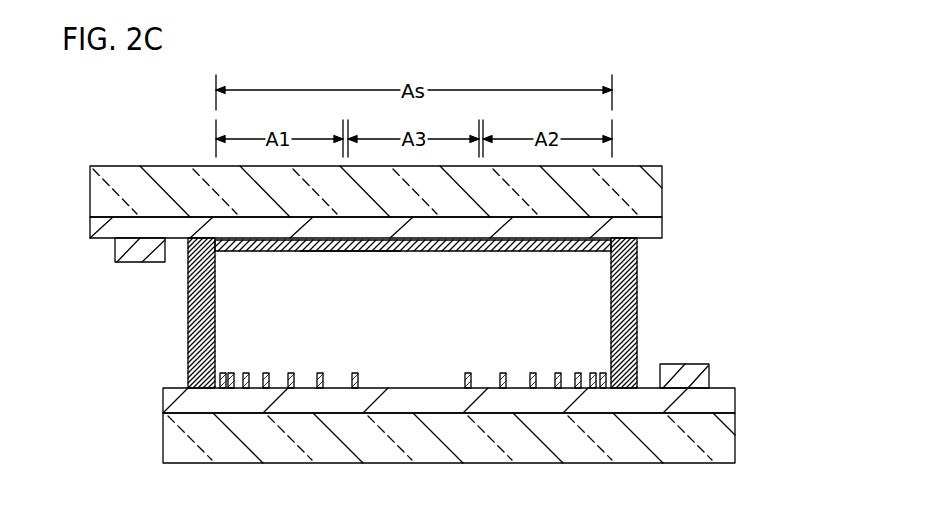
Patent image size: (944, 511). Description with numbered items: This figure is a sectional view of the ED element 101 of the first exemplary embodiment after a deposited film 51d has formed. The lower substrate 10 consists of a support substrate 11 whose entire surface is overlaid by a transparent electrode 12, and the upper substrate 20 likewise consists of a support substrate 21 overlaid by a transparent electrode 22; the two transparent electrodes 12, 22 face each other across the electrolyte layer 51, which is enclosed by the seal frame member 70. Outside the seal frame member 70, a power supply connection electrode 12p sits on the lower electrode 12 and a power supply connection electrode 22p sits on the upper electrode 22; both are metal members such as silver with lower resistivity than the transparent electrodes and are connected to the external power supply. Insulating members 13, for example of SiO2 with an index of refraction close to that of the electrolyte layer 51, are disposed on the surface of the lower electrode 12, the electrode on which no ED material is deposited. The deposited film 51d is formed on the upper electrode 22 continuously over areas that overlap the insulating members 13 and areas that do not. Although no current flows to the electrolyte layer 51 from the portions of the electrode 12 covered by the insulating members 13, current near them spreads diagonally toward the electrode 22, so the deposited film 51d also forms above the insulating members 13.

The ED element 101 is at (800, 497).
The lower substrate 10 is at (442, 389).
The support substrate 11 is at (483, 438).
The transparent electrode 12 is at (483, 396).
The power supply connection electrode 12p is at (723, 366).
The insulating members 13 is at (219, 363).
The upper substrate 20 is at (394, 207).
The support substrate 21 is at (411, 191).
The transparent electrode 22 is at (411, 222).
The power supply connection electrode 22p is at (111, 263).
The electrolyte layer 51 is at (561, 310).
The deposited film 51d is at (336, 275).
The seal frame member 70 is at (458, 313).